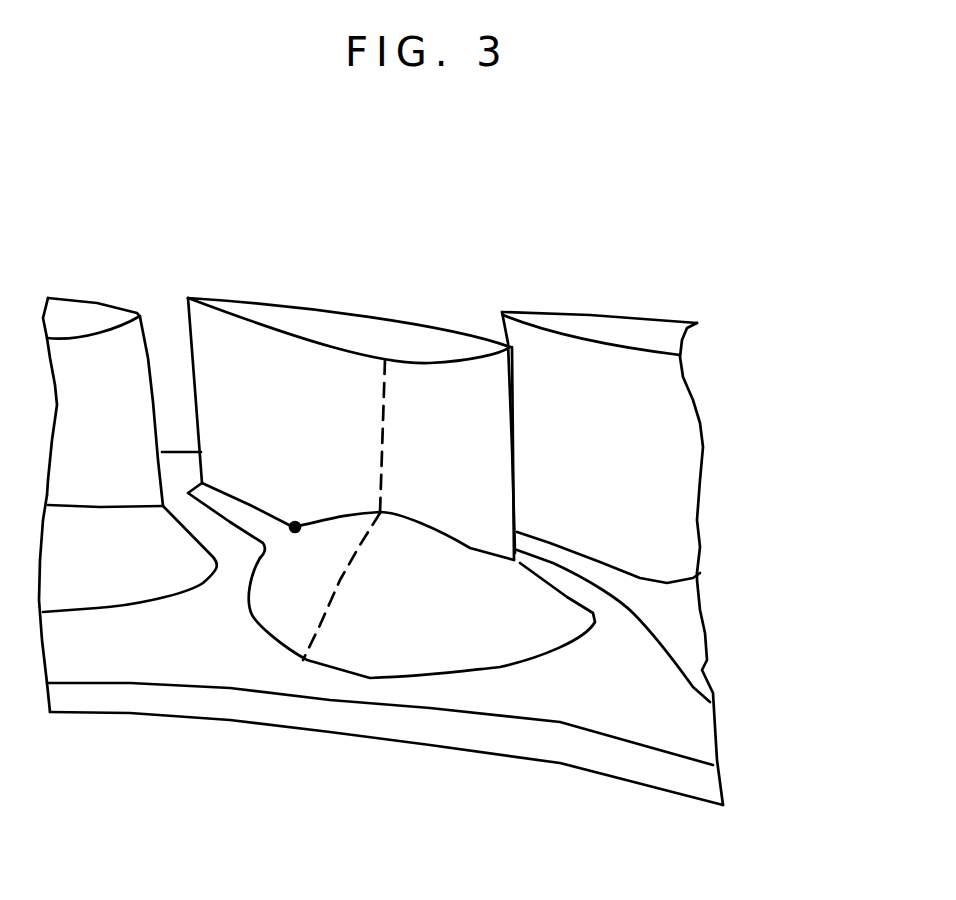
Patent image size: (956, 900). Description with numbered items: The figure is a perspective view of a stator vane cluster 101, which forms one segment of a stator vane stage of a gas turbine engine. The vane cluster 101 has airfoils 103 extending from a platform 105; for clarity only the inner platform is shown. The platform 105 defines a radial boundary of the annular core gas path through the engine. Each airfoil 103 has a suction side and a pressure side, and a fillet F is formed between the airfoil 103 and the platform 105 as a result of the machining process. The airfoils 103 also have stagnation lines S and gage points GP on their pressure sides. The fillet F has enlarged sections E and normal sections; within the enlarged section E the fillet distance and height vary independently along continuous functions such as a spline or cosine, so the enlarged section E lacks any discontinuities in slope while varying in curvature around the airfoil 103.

The stator vane cluster 101 is at (613, 208).
The airfoil 103 is at (118, 424).
The platform 105 is at (697, 730).
The enlarged section E is at (447, 632).
The fillet F is at (217, 497).
The gage point GP is at (300, 510).
The stagnation line S is at (387, 453).